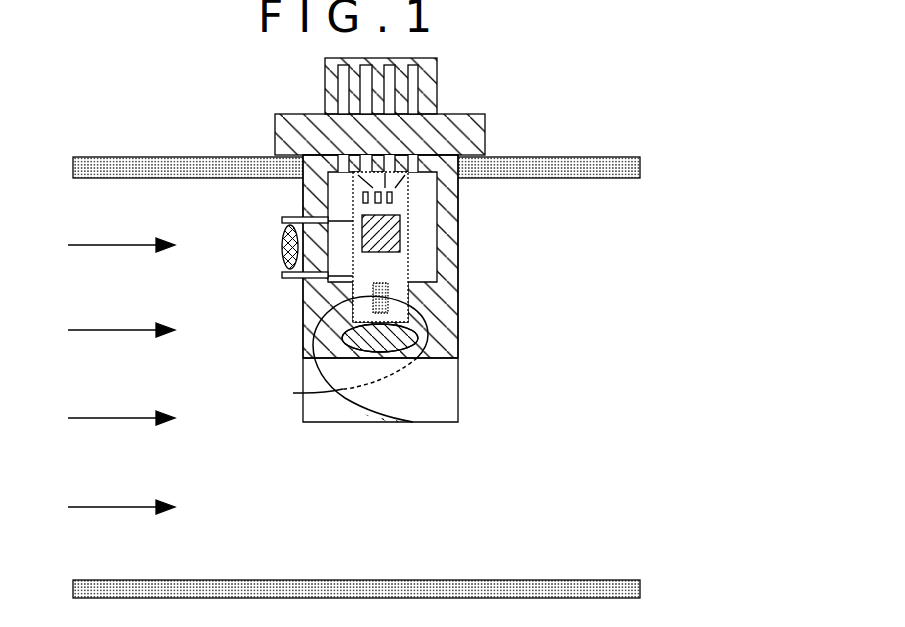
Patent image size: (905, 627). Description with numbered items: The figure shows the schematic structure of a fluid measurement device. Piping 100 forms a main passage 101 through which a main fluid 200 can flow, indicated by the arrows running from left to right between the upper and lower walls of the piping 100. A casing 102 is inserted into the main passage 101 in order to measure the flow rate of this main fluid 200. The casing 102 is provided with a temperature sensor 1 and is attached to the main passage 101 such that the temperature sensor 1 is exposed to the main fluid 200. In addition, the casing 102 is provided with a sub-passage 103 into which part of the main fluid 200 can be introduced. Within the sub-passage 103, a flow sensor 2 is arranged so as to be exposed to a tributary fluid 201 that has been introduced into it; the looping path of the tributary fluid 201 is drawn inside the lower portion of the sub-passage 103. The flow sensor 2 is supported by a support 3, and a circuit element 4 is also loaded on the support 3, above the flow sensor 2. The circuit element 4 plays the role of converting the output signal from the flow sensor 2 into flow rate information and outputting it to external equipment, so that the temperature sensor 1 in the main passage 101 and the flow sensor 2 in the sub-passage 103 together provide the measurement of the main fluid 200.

The piping 100 is at (92, 158).
The main passage 101 is at (167, 203).
The casing 102 is at (437, 77).
The sub-passage 103 is at (443, 397).
The temperature sensor 1 is at (282, 247).
The flow sensor 2 is at (403, 302).
The support 3 is at (383, 267).
The circuit element 4 is at (393, 222).
The main fluid 200 is at (88, 248).
The tributary fluid 201 is at (293, 393).